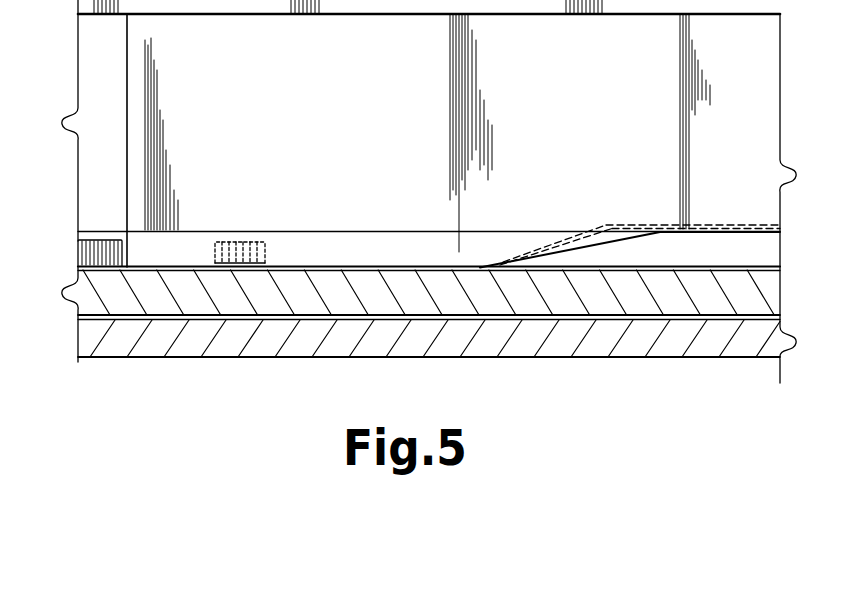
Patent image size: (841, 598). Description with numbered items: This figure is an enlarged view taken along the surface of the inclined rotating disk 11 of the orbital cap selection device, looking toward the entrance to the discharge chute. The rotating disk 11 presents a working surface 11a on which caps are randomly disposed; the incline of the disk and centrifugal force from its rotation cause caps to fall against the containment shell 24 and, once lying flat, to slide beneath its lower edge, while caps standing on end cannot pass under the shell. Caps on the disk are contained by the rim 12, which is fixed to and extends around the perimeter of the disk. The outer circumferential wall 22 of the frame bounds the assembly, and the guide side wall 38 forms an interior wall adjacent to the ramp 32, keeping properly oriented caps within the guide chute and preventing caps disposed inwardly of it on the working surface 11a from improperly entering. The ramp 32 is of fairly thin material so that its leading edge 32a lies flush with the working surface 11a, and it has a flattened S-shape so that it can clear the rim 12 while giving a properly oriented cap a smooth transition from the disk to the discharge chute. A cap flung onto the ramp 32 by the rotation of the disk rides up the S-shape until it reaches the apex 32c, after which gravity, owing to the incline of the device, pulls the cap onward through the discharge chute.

The rotating disk 11 is at (764, 302).
The working surface 11a is at (763, 287).
The rim 12 is at (765, 264).
The outer circumferential wall 22 is at (719, 262).
The containment shell 24 is at (413, 142).
The ramp 32 is at (702, 226).
The leading edge 32a is at (480, 266).
The apex 32c is at (612, 223).
The guide side wall 38 is at (413, 260).